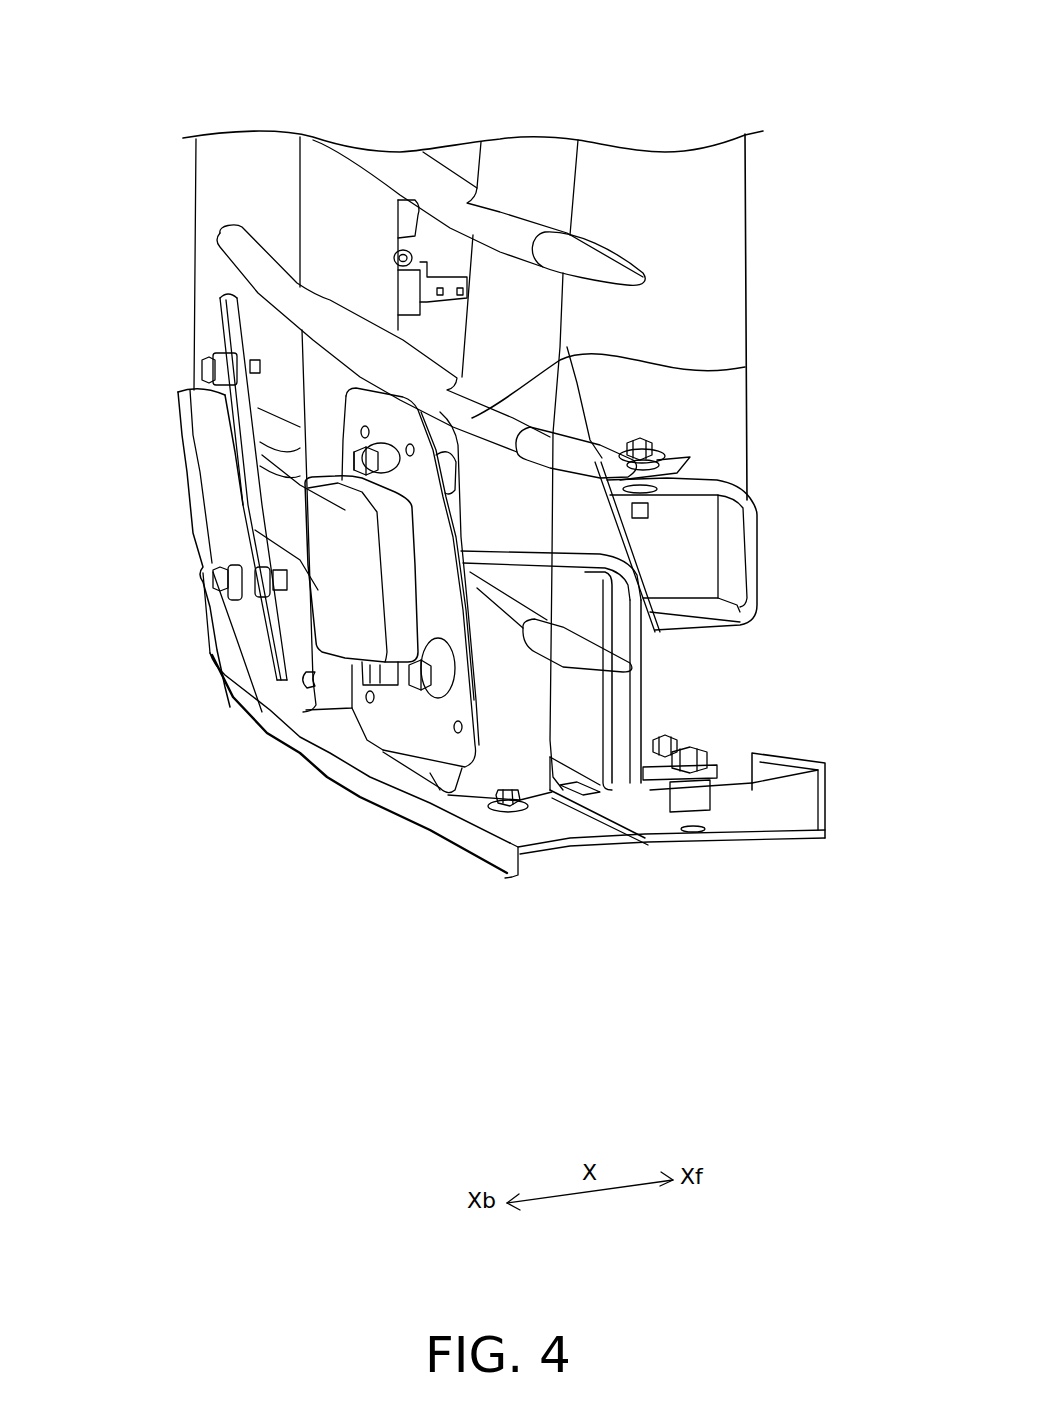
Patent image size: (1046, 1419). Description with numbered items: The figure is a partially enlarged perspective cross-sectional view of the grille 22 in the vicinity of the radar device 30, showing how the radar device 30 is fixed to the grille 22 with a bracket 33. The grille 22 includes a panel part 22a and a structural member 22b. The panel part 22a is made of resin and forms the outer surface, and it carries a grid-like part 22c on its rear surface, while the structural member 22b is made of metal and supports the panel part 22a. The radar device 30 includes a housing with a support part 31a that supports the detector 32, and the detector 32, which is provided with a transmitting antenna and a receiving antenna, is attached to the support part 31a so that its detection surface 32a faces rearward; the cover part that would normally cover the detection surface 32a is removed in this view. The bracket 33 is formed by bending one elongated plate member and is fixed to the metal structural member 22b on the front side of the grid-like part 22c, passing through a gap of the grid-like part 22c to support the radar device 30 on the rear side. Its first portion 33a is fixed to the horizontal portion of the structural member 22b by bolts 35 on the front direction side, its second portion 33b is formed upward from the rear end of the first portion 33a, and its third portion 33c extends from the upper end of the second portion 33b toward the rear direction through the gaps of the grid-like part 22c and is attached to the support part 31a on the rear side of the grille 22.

The grille 22 is at (453, 138).
The panel part 22a is at (487, 790).
The structural member 22b is at (747, 817).
The grid-like part 22c is at (745, 367).
The radar device 30 is at (203, 573).
The support part 31a is at (383, 708).
The detector 32 is at (217, 460).
The detection surface 32a is at (187, 443).
The bracket 33 is at (592, 545).
The first portion 33a is at (662, 780).
The second portion 33b is at (633, 697).
The third portion 33c is at (655, 448).
The bolts 35 is at (673, 738).